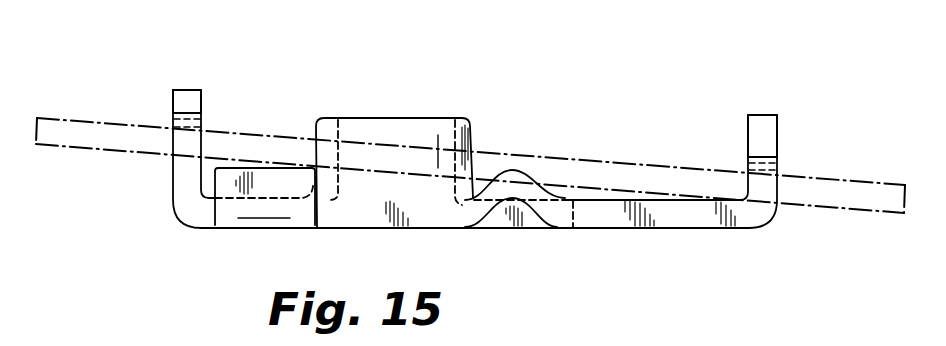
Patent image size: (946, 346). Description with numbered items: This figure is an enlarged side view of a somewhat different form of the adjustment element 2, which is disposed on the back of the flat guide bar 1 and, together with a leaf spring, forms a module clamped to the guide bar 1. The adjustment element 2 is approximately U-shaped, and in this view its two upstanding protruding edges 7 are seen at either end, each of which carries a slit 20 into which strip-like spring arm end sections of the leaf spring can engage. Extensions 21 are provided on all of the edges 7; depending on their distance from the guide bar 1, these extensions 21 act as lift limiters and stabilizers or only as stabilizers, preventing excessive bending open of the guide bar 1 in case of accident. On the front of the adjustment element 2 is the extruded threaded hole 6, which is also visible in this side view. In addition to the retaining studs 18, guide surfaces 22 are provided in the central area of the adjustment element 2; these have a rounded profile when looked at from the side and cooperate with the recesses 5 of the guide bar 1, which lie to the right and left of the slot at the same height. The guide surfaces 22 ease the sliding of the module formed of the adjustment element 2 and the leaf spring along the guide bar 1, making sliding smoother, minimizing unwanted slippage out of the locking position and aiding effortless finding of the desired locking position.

The guide bar 1 is at (658, 164).
The adjustment element 2 is at (692, 229).
The recesses 5 is at (210, 155).
The extruded threaded hole 6 is at (390, 128).
The protruding edge 7 is at (185, 170).
The retaining studs 18 is at (264, 176).
The slits 20 is at (172, 121).
The lateral extensions 21 is at (187, 97).
The guide surfaces 22 is at (515, 174).